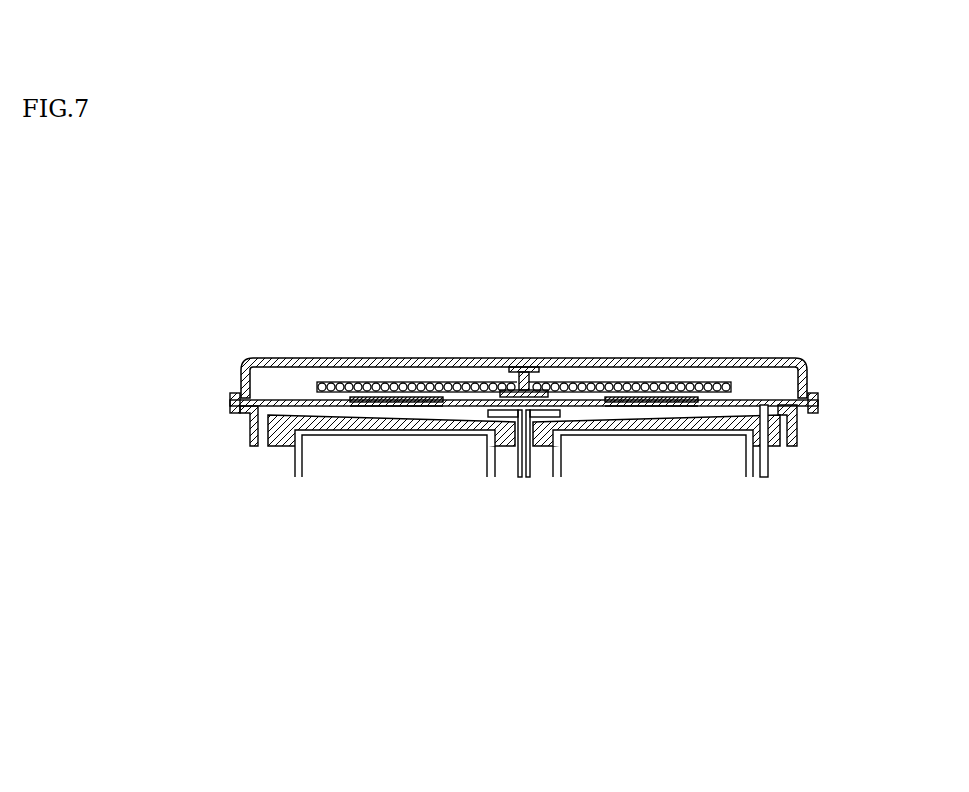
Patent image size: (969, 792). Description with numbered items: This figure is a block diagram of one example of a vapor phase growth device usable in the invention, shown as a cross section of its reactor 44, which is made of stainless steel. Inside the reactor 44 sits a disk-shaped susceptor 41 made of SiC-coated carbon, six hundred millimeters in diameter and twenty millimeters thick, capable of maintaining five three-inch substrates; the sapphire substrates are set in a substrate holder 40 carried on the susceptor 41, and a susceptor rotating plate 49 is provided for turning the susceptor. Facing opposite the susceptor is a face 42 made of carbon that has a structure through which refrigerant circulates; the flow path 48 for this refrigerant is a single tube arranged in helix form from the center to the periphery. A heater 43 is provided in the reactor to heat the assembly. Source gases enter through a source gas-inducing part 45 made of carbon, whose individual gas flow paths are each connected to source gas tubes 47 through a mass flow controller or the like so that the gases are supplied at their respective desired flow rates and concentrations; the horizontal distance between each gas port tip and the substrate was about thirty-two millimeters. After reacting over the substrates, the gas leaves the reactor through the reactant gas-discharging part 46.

The substrate holder 40 is at (352, 400).
The susceptor 41 is at (314, 404).
The face opposite to the susceptor 42 is at (396, 434).
The heater 43 is at (540, 370).
The reactor 44 is at (418, 411).
The source gas-inducing part 45 is at (490, 413).
The reactant gas-discharging part 46 is at (240, 393).
The source gas tube 47 is at (524, 478).
The flow path circulating refrigerant 48 is at (493, 460).
The susceptor rotating plate 49 is at (795, 420).